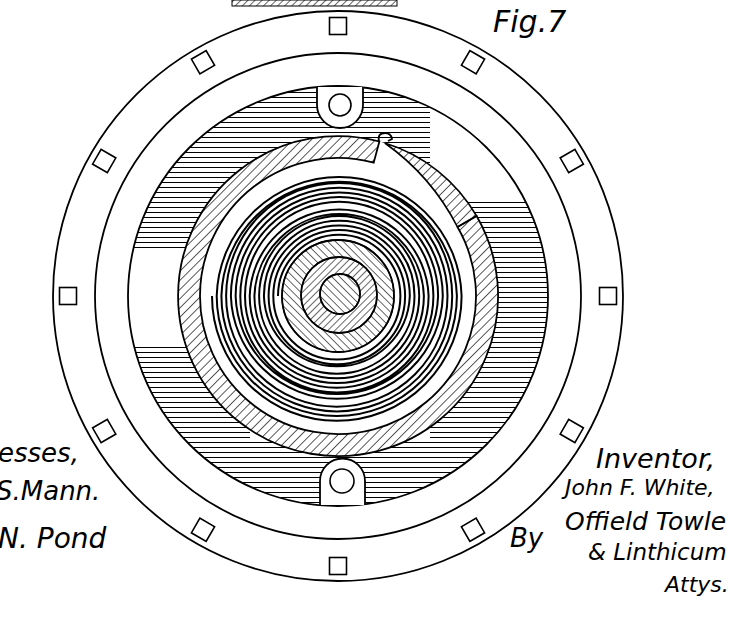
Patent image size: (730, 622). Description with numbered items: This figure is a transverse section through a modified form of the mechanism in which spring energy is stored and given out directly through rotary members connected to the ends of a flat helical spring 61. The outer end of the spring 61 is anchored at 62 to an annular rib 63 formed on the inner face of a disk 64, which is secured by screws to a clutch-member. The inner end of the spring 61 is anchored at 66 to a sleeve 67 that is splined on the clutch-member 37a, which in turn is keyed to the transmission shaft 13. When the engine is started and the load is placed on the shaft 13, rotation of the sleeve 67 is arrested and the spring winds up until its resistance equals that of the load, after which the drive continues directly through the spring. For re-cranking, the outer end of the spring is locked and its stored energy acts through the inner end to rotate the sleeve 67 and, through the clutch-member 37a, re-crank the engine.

The transmission shaft 13 is at (372, 300).
The clutch-member 37a is at (386, 318).
The spring 61 is at (471, 204).
The anchorage of outer end of spring 62 is at (385, 137).
The annular rib 63 is at (446, 171).
The disk 64 is at (523, 217).
The anchorage of inner end of spring 66 is at (356, 242).
The sleeve 67 is at (392, 265).